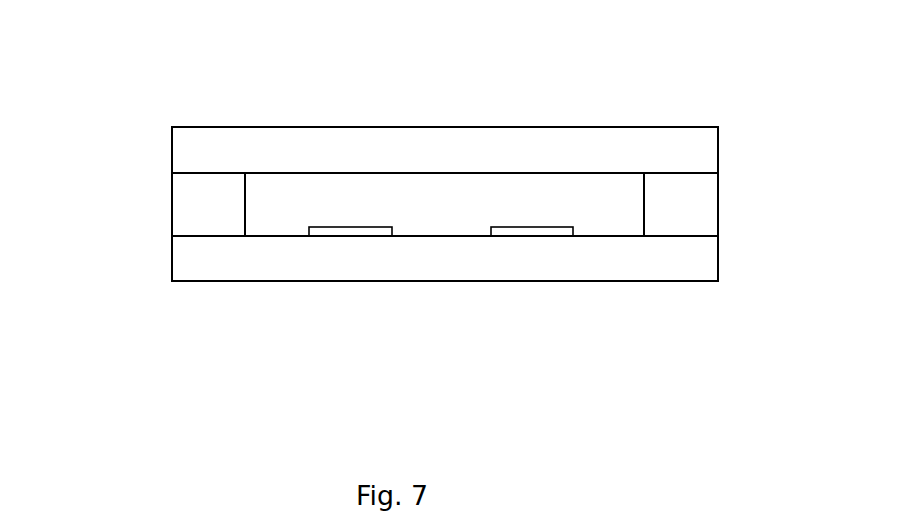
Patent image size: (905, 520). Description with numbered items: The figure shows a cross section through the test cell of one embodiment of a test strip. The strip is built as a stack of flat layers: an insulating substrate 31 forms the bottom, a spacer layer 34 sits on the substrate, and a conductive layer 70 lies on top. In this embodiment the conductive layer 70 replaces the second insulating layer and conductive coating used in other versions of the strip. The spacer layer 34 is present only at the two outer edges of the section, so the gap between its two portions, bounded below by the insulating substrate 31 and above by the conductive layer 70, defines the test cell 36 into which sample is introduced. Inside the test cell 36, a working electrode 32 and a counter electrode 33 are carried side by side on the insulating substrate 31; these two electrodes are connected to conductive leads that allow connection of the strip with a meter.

The conductive layer 70 is at (636, 147).
The insulating substrate 31 is at (245, 272).
The spacer layer 34 is at (190, 200).
The test cell 36 is at (458, 204).
The working electrode 32 is at (335, 228).
The counter electrode 33 is at (535, 228).